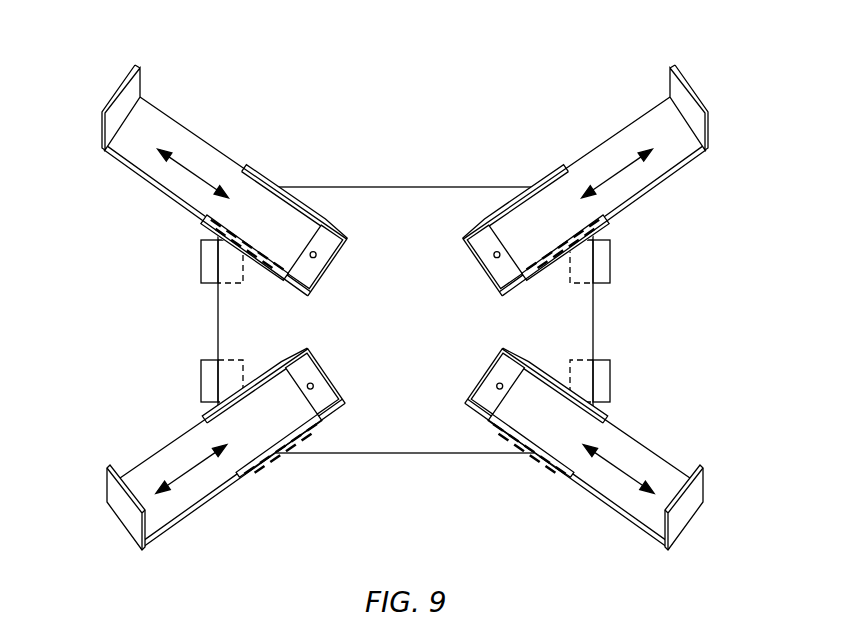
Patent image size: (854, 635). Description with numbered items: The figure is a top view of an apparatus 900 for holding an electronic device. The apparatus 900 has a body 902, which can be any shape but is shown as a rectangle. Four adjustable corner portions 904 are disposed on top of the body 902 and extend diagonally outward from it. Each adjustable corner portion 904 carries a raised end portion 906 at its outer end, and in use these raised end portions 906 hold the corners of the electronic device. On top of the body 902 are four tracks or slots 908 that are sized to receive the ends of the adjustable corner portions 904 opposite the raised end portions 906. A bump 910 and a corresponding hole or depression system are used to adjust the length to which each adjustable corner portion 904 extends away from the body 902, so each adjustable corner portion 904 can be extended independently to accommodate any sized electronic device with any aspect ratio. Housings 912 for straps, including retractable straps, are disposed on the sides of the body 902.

The apparatus for holding an electronic device 900 is at (367, 284).
The body 902 is at (356, 187).
The adjustable corner portion 904 is at (168, 114).
The raised end portion 906 is at (132, 70).
The track or slot 908 is at (483, 222).
The bump 910 is at (495, 259).
The housing for straps 912 is at (611, 256).